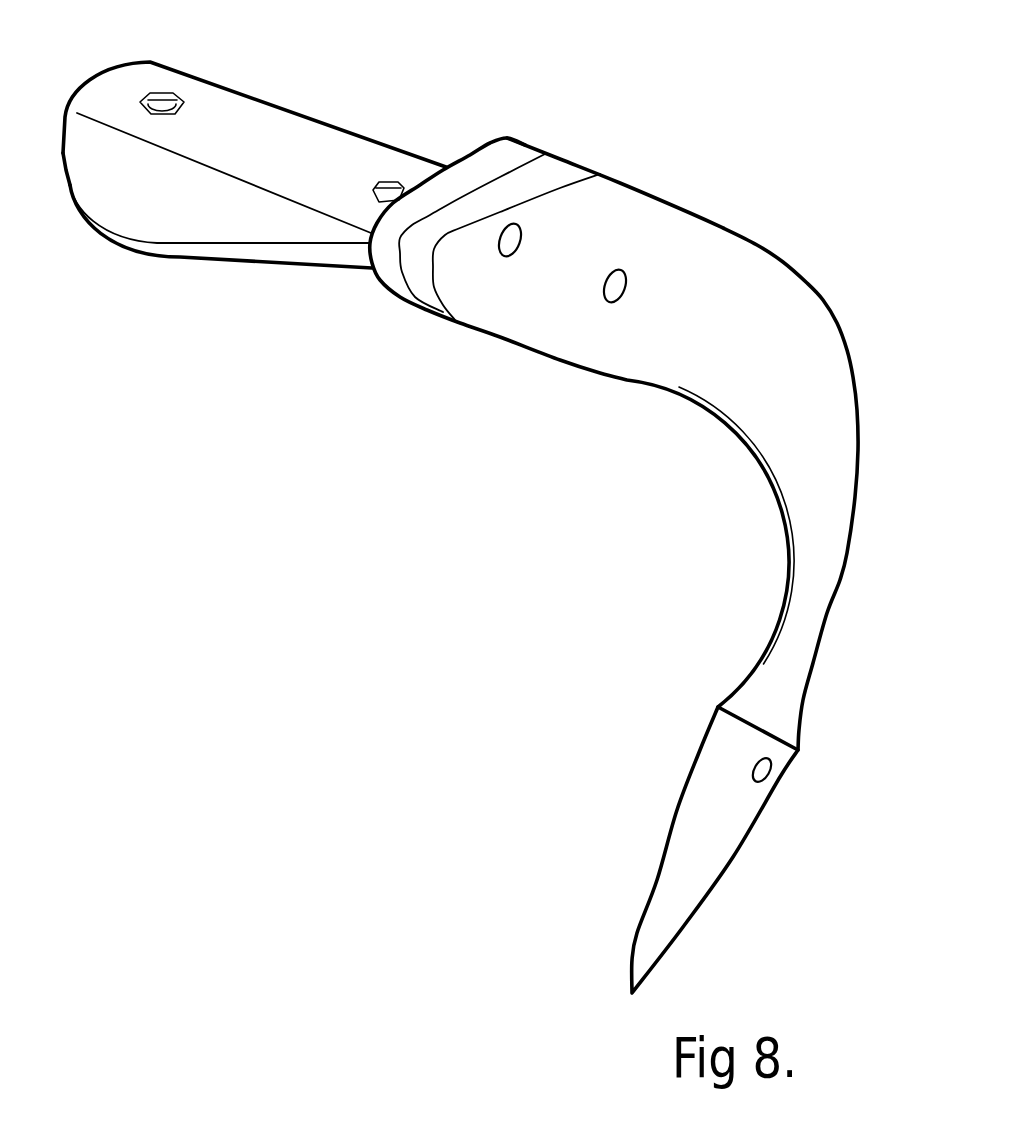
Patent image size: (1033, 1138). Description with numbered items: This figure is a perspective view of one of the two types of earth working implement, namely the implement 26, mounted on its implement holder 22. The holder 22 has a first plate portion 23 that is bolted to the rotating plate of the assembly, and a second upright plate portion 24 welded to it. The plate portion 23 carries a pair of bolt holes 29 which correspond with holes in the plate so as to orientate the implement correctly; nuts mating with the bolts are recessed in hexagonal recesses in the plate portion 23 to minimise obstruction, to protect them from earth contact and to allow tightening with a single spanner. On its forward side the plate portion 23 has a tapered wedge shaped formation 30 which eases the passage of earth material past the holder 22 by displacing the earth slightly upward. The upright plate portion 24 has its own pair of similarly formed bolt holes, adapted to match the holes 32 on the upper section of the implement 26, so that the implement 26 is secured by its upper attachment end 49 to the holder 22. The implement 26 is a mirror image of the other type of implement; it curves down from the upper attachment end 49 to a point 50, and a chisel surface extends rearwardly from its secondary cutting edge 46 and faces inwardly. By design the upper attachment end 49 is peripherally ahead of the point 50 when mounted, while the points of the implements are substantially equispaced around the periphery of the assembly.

The implement holder 22 is at (117, 72).
The first plate portion 23 is at (285, 133).
The second upright plate portion 24 is at (465, 168).
The earth working implement 26 is at (825, 302).
The bolt holes 29 is at (175, 93).
The tapered wedge shaped formation 30 is at (143, 212).
The holes 32 is at (522, 228).
The secondary cutting edge 46 is at (782, 530).
The upper attachment end 49 is at (413, 277).
The point 50 is at (630, 992).